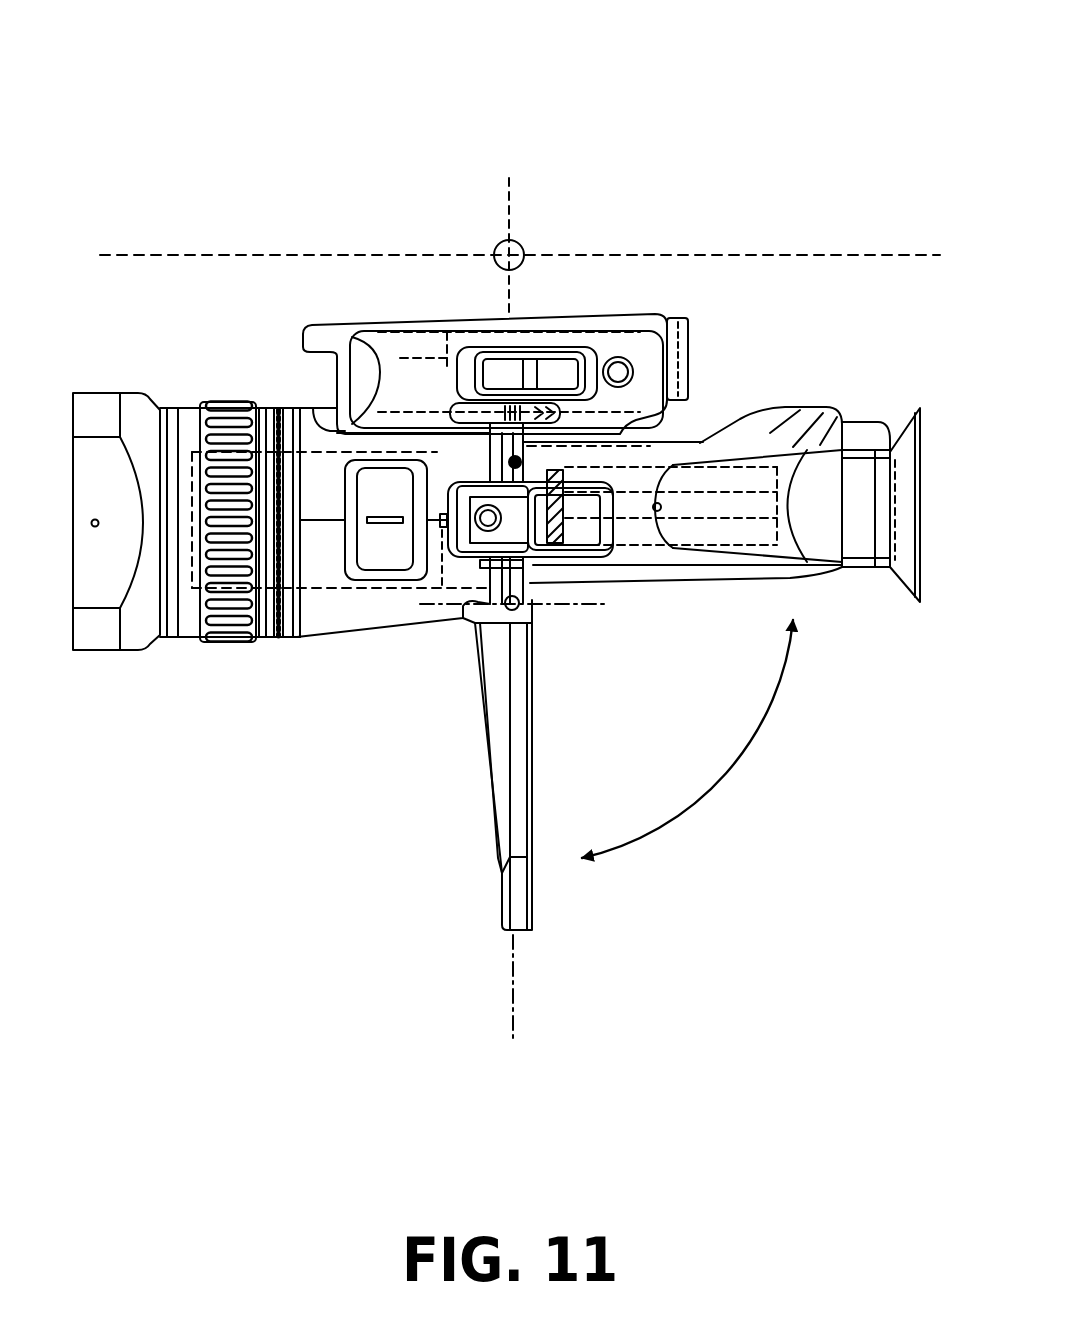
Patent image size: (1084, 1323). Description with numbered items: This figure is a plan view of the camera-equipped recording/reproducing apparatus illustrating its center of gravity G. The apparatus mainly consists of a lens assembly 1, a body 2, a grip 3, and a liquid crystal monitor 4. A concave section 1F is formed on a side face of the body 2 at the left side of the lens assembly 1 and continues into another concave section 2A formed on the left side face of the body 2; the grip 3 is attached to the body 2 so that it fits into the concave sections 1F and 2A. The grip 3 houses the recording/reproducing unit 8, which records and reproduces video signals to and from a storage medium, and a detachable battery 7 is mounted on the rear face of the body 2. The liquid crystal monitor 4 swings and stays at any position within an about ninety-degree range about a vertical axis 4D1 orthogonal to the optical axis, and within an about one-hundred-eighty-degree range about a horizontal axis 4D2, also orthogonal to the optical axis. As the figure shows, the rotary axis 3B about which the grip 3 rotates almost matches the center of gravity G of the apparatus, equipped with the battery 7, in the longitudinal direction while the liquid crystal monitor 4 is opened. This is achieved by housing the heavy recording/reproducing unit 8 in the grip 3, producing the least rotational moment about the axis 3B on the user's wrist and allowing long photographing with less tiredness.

The lens assembly 1 is at (261, 680).
The concave section 1F is at (312, 405).
The body 2 is at (799, 382).
The concave section 2A is at (703, 427).
The grip 3 is at (594, 294).
The rotary axis 3B is at (509, 148).
The liquid crystal monitor 4 is at (558, 741).
The vertical axis 4D1 is at (537, 612).
The horizontal axis 4D2 is at (513, 972).
The battery 7 is at (858, 424).
The recording/reproducing unit 8 is at (467, 327).
The center of gravity G is at (495, 462).